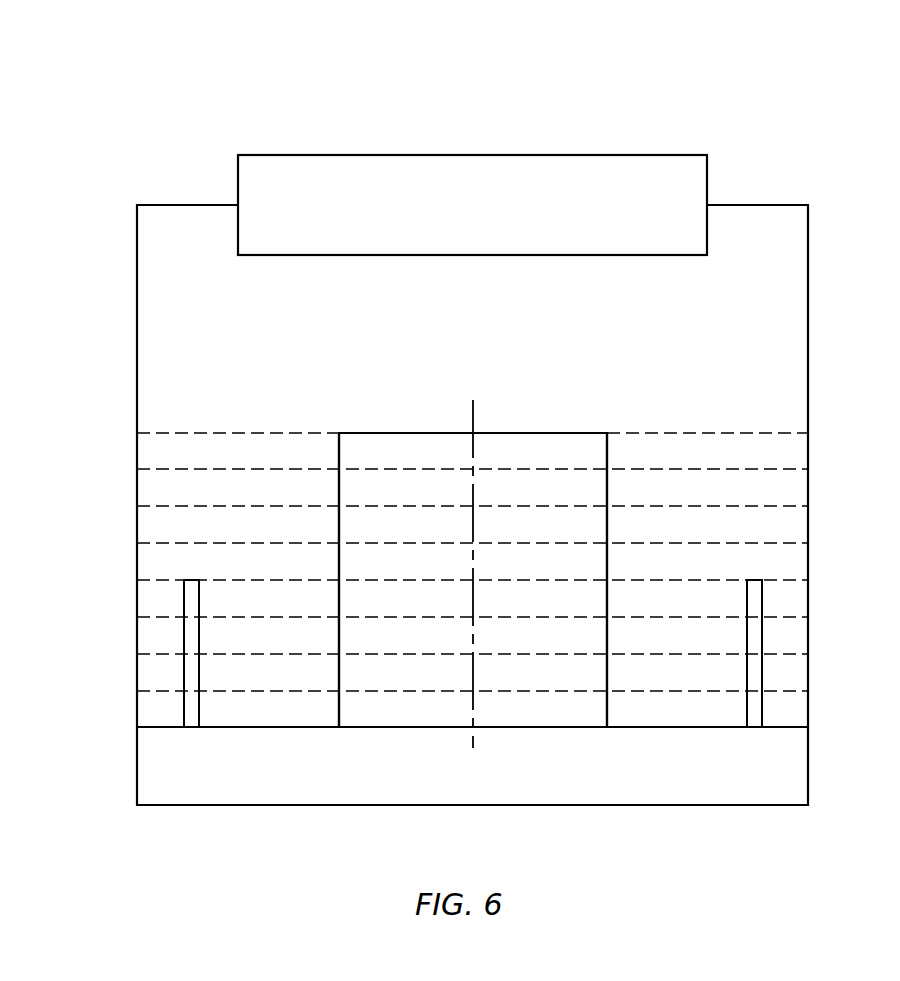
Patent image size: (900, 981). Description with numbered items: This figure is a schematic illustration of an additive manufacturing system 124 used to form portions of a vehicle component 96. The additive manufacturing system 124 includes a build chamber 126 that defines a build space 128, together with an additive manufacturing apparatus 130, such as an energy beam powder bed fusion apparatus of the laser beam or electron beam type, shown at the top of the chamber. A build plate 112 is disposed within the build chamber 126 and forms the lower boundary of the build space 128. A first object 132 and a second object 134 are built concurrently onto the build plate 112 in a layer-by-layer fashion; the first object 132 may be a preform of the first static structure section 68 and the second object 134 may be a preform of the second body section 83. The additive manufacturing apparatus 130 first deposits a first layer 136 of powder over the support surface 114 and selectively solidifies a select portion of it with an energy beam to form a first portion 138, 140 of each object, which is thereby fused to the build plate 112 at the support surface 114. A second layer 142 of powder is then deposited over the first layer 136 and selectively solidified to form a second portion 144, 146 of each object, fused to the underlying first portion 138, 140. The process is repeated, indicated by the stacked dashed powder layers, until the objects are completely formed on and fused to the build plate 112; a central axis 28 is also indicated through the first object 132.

The additive manufacturing system 124 is at (748, 108).
The build chamber 126 is at (808, 275).
The build space 128 is at (713, 308).
The additive manufacturing apparatus 130 is at (285, 154).
The build plate 112 is at (208, 782).
The second layer of powder 142 is at (786, 675).
The first layer of powder 136 is at (795, 708).
The first static structure section 68 is at (589, 427).
The first object 132 is at (473, 580).
The vehicle component 96 is at (359, 410).
The central axis 28 is at (475, 412).
The second portion of the first object 144 is at (516, 670).
The first portion of the first object 138 is at (565, 715).
The second body section 83 is at (177, 573).
The second object 134 is at (473, 653).
The second portion of the second object 146 is at (190, 675).
The support surface 114 is at (167, 727).
The first portion of the second object 140 is at (192, 708).